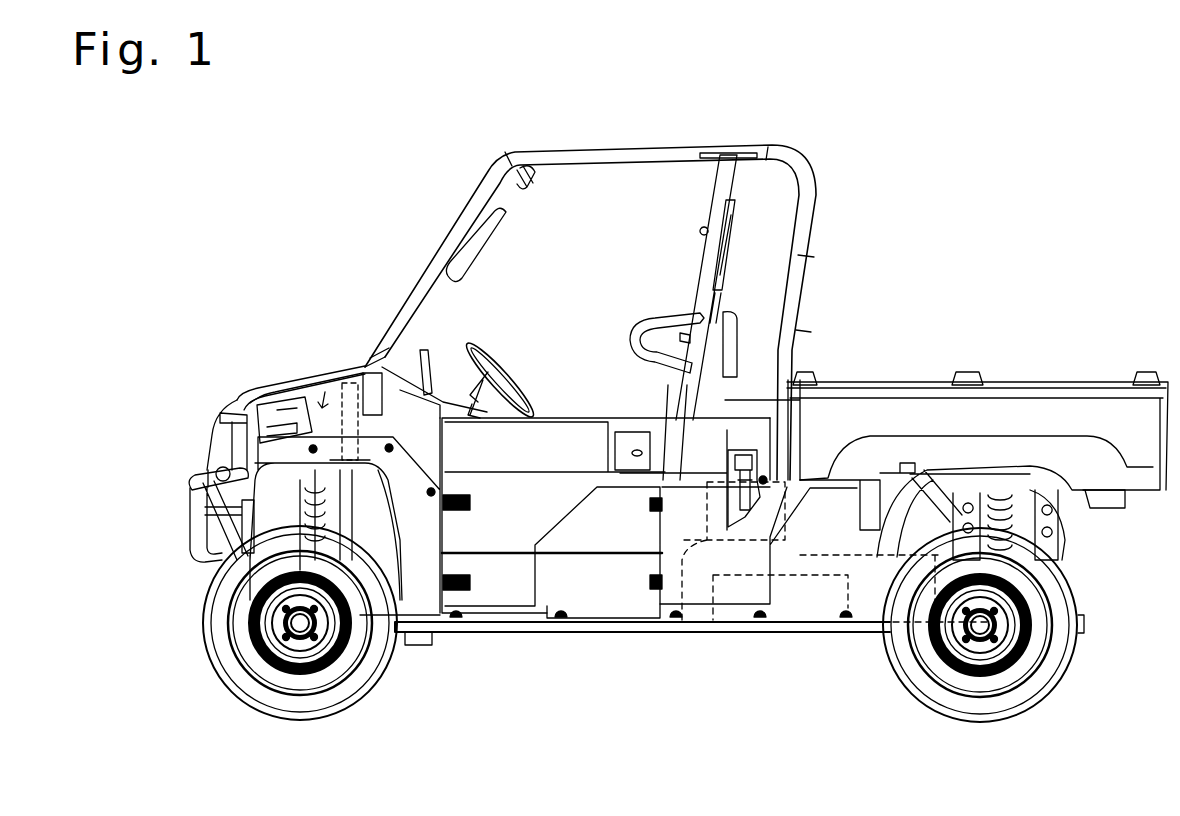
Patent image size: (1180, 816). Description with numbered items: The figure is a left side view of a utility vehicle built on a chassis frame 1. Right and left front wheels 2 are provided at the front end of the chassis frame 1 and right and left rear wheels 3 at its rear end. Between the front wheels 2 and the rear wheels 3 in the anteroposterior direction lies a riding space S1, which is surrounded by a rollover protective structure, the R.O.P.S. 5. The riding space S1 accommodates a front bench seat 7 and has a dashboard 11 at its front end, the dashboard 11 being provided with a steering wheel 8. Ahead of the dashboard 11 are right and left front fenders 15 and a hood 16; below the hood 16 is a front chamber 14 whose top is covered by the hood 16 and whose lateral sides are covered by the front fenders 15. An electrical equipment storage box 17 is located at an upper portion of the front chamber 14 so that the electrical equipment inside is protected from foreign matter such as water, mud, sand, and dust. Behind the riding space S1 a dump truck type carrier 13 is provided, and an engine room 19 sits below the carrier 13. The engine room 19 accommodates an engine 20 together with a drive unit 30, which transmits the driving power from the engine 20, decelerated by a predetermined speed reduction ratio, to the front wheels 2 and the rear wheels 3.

The chassis frame 1 is at (645, 640).
The front wheels 2 is at (235, 690).
The rear wheels 3 is at (1040, 705).
The R.O.P.S. 5 is at (800, 150).
The front bench seat 7 is at (660, 400).
The steering wheel 8 is at (487, 352).
The dashboard 11 is at (450, 370).
The carrier 13 is at (1005, 378).
The front chamber 14 is at (322, 392).
The front fenders 15 is at (290, 403).
The hood 16 is at (305, 380).
The electrical equipment storage box 17 is at (352, 385).
The engine room 19 is at (823, 503).
The engine 20 is at (700, 640).
The drive unit 30 is at (820, 595).
The riding space S1 is at (568, 256).